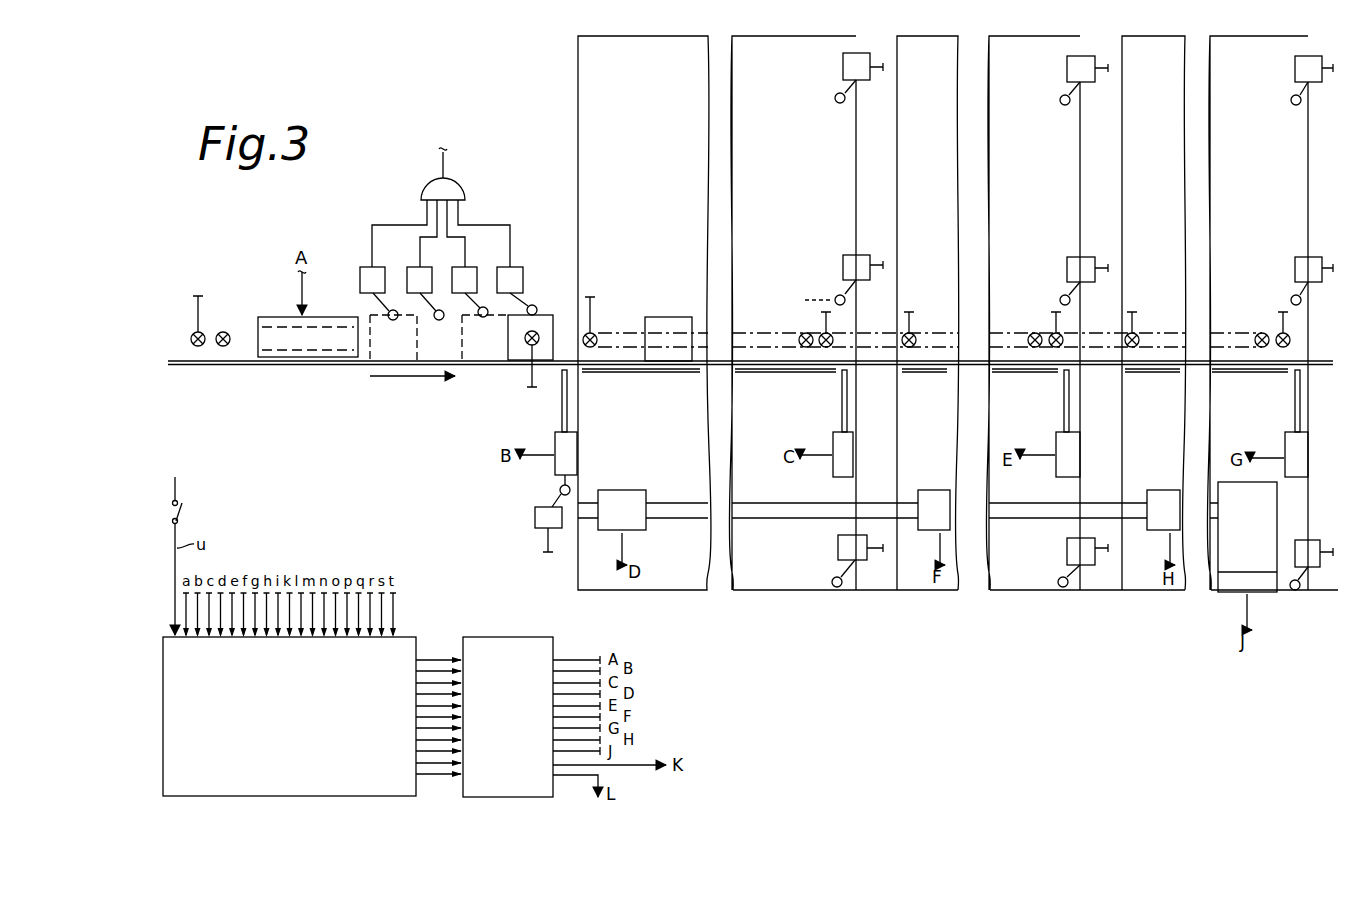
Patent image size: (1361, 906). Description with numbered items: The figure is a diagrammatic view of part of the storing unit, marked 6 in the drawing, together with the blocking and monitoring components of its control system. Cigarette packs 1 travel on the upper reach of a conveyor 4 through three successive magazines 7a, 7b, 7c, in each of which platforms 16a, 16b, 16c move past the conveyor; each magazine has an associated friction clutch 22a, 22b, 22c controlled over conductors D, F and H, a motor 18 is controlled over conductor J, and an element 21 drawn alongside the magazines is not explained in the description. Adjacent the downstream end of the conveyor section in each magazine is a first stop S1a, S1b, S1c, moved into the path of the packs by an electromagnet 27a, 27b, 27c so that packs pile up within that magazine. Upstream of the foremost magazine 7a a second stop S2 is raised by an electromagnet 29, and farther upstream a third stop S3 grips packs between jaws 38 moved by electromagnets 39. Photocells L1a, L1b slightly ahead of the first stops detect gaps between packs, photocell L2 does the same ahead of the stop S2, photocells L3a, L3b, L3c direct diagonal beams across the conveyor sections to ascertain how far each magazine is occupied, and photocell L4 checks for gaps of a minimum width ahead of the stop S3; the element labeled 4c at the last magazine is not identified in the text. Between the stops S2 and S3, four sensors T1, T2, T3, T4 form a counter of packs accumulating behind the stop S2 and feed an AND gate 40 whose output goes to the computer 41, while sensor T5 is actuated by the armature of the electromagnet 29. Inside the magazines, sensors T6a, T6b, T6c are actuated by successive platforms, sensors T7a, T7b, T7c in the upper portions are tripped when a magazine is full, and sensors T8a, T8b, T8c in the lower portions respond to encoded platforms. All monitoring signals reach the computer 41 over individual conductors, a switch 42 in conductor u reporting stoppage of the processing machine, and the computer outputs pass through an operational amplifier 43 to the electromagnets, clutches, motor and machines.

The pack 1 is at (548, 313).
The conveyor 4 is at (240, 367).
The lamp 4c is at (1290, 334).
The processing installation 6 is at (535, 118).
The magazine 7a is at (644, 313).
The magazine 7b is at (928, 313).
The magazine 7c is at (1154, 313).
The platforms 16a is at (590, 383).
The platforms 16b is at (995, 383).
The platforms 16c is at (1218, 383).
The motor 18 is at (1247, 537).
The drive shaft 21 is at (672, 512).
The friction clutch 22a is at (637, 478).
The friction clutch 22b is at (934, 492).
The friction clutch 22c is at (1152, 491).
The electromagnet 27a is at (833, 440).
The electromagnet 27b is at (1056, 442).
The electromagnet 27c is at (1285, 443).
The electromagnet 29 is at (556, 442).
The jaws 38 is at (324, 317).
The electromagnets 39 is at (262, 320).
The AND gate 40 is at (465, 187).
The computer 41 is at (289, 716).
The switch 42 is at (190, 511).
The operational amplifier 43 is at (508, 717).
The sensor T1 is at (517, 291).
The sensor T2 is at (470, 292).
The sensor T3 is at (425, 293).
The sensor T4 is at (379, 293).
The sensor T5 is at (535, 522).
The sensor T6a is at (843, 268).
The sensor T6b is at (1067, 268).
The sensor T6c is at (1295, 270).
The sensor T7a is at (843, 67).
The sensor T7b is at (1067, 68).
The sensor T7c is at (1295, 68).
The sensor T8a is at (838, 548).
The sensor T8b is at (1067, 548).
The sensor T8c is at (1304, 540).
The photocell L1a is at (833, 340).
The photocell L1b is at (1063, 340).
The photocell L2 is at (525, 338).
The photocell L3a is at (596, 333).
The photocell L3b is at (915, 333).
The photocell L3c is at (1138, 333).
The photocell L4 is at (203, 330).
The first stop S1a is at (830, 398).
The first stop S1b is at (1055, 418).
The first stop S1c is at (1284, 420).
The second stop S2 is at (552, 412).
The third stop S3 is at (283, 303).